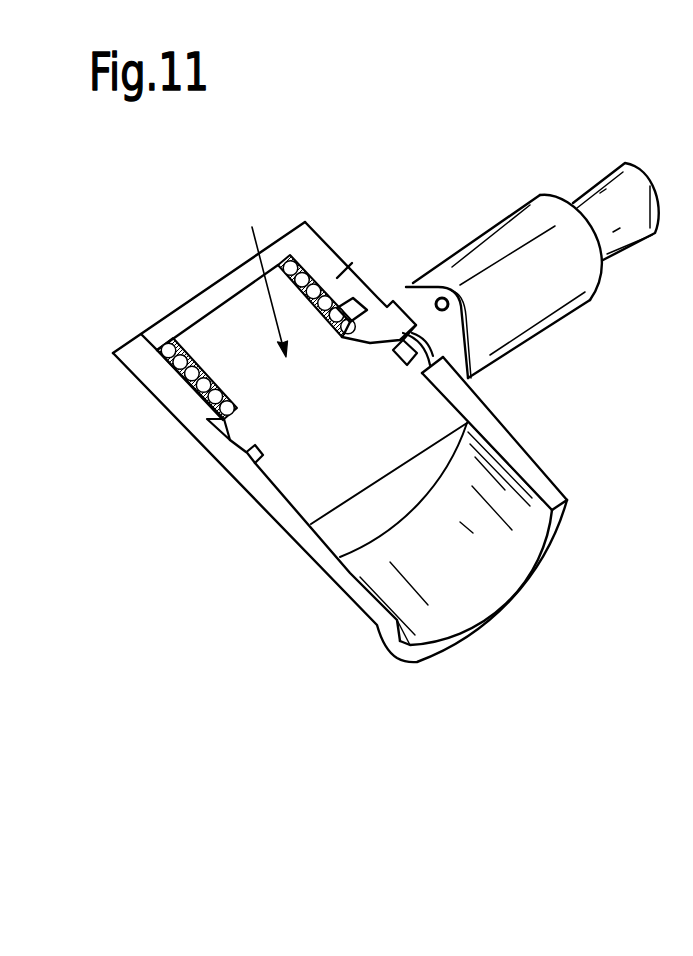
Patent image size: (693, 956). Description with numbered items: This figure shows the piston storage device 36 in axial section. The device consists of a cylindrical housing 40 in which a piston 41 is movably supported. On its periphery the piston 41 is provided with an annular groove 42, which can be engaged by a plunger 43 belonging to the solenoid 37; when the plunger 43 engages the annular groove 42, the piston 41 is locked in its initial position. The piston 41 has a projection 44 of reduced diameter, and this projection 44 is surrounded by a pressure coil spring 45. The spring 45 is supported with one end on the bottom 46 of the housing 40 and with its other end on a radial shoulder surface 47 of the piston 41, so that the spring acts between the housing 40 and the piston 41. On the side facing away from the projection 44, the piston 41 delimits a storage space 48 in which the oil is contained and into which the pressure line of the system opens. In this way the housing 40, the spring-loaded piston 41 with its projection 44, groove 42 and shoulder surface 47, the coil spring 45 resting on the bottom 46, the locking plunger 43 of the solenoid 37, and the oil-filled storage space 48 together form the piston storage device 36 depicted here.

The piston storage device 36 is at (393, 165).
The solenoid 37 is at (520, 244).
The cylindrical housing 40 is at (510, 454).
The piston 41 is at (258, 274).
The annular groove 42 is at (247, 460).
The plunger 43 is at (410, 352).
The projection 44 is at (237, 347).
The pressure coil spring 45 is at (290, 264).
The bottom 46 is at (192, 303).
The radial shoulder surface 47 is at (371, 343).
The storage space 48 is at (505, 565).